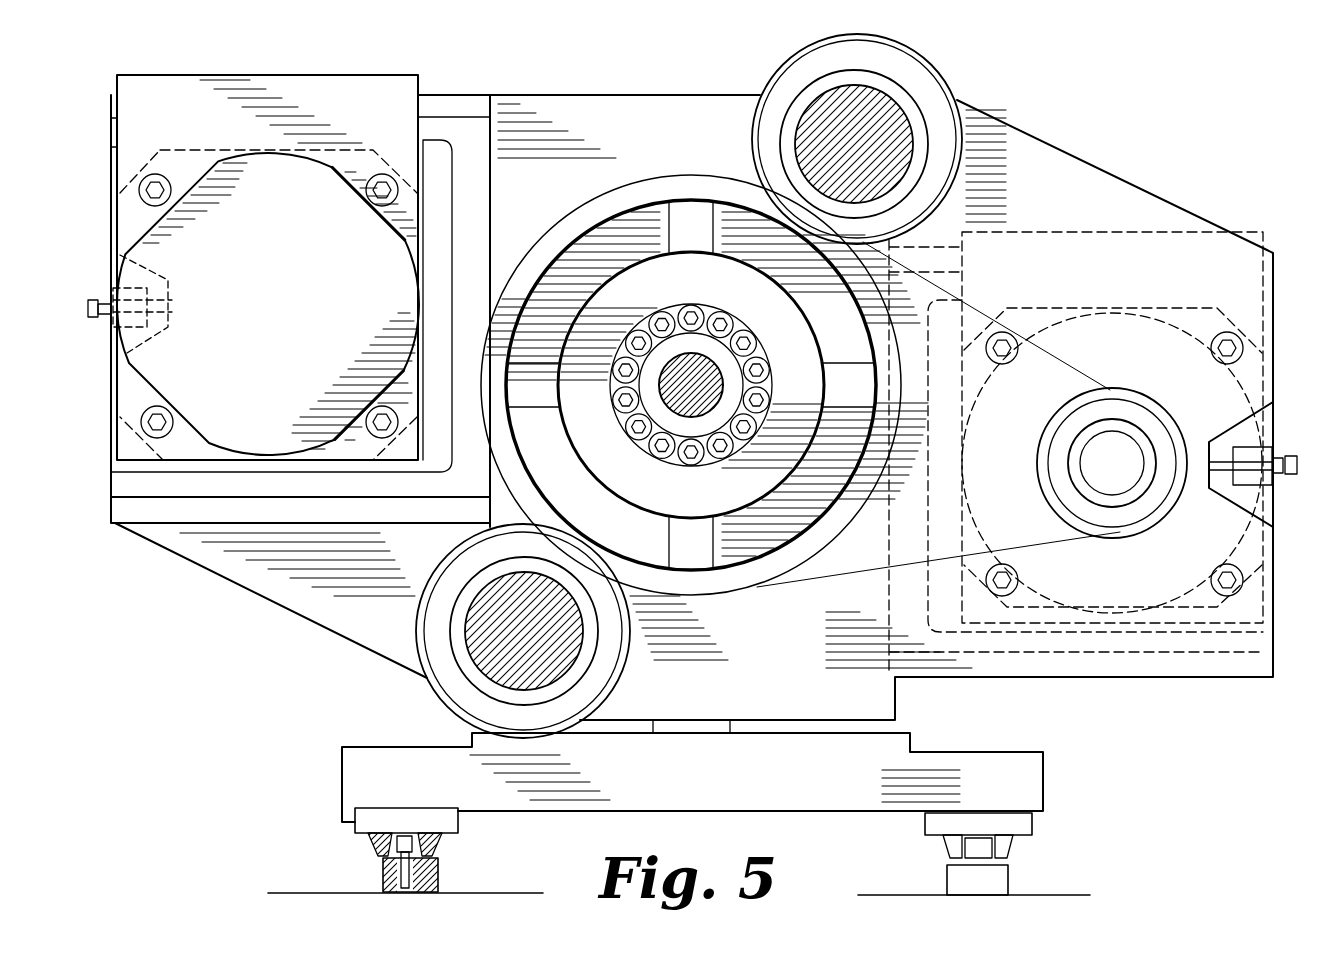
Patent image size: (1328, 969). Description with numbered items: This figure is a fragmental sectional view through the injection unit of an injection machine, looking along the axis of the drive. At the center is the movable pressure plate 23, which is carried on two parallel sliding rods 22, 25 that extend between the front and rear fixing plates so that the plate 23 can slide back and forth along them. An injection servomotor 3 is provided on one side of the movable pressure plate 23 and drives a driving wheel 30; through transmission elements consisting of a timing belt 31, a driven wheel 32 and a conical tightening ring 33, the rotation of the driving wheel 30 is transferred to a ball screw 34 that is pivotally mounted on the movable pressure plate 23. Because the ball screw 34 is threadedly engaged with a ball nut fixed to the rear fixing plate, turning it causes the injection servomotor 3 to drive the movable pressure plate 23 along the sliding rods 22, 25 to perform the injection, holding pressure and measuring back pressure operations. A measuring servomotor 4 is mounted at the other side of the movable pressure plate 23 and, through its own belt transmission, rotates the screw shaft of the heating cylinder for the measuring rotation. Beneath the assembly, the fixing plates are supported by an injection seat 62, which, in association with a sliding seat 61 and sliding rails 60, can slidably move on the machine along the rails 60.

The injection servomotor 3 is at (1228, 402).
The measuring servomotor 4 is at (314, 195).
The sliding rod 22 is at (893, 120).
The movable pressure plate 23 is at (518, 120).
The sliding rod 25 is at (470, 632).
The driving wheel 30 is at (1127, 513).
The timing belt 31 is at (963, 353).
The driven wheel 32 is at (592, 207).
The conical tightening ring 33 is at (661, 312).
The ball screw 34 is at (702, 357).
The sliding rails 60 is at (392, 890).
The sliding seat 61 is at (370, 828).
The injection seat 62 is at (353, 765).